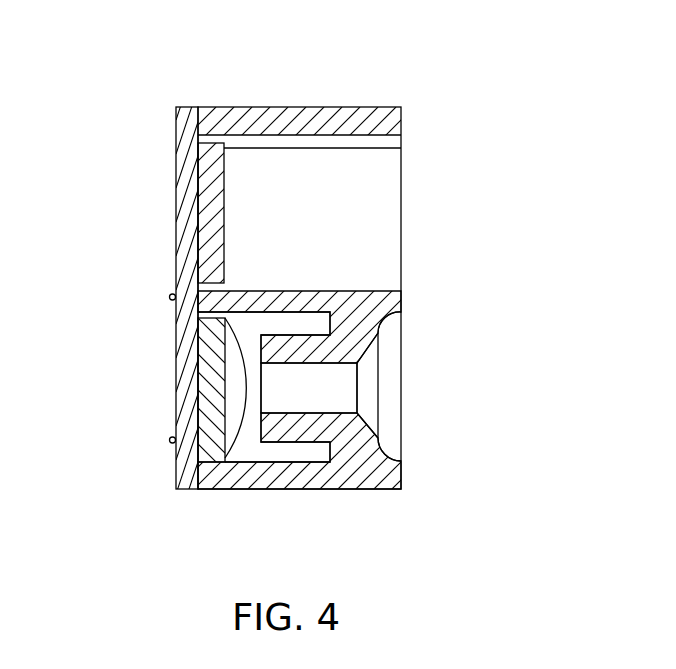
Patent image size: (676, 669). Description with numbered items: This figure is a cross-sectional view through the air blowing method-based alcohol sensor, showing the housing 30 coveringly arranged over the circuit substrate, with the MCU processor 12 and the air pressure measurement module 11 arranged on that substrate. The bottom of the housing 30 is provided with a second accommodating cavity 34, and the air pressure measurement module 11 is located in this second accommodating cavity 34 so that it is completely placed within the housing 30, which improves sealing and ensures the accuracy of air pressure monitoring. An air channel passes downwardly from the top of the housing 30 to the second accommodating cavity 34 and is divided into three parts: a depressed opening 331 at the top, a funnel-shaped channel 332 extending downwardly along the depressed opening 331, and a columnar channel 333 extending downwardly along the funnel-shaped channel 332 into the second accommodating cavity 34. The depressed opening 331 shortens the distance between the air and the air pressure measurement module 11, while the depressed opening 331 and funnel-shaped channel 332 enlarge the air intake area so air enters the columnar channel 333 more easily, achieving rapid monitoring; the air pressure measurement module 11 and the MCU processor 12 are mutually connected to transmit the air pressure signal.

The housing 30 is at (289, 115).
The MCU processor 12 is at (212, 223).
The air pressure measurement module 11 is at (208, 400).
The second accommodating cavity 34 is at (250, 328).
The depressed opening 331 is at (393, 358).
The funnel-shaped channel 332 is at (369, 397).
The columnar channel 333 is at (323, 397).